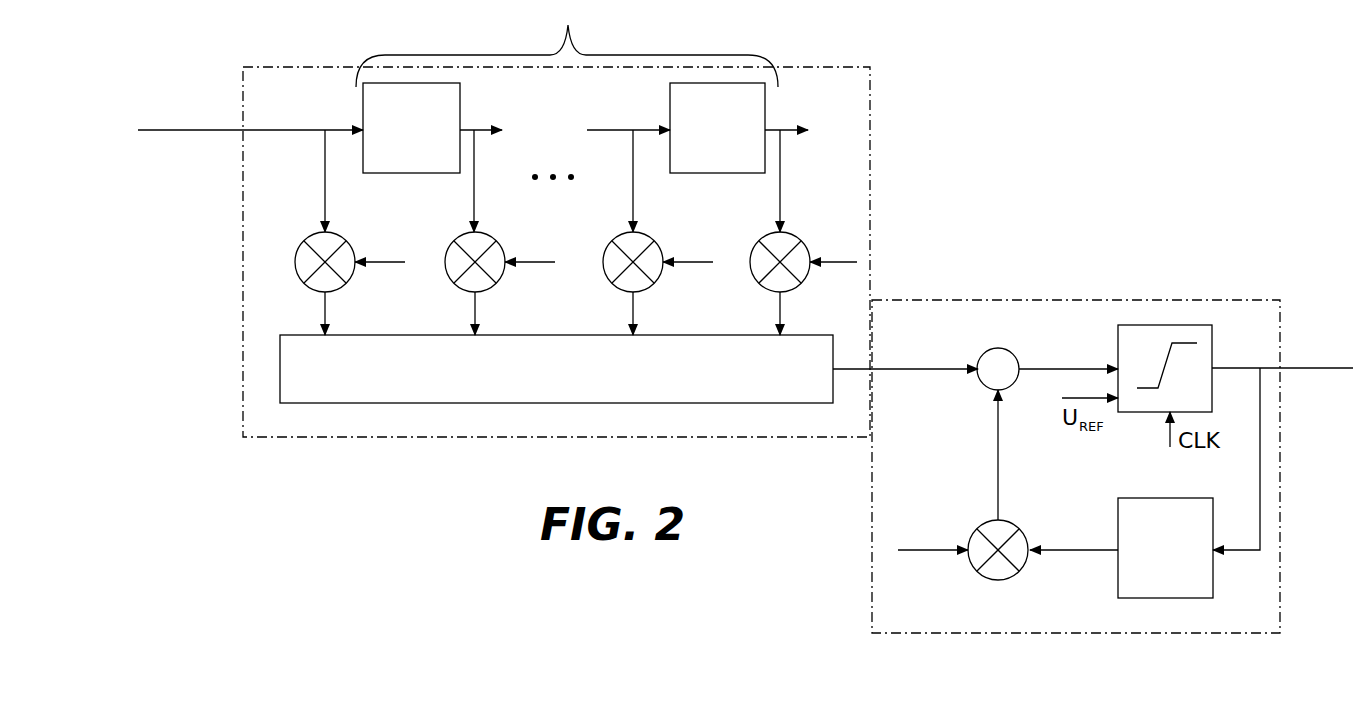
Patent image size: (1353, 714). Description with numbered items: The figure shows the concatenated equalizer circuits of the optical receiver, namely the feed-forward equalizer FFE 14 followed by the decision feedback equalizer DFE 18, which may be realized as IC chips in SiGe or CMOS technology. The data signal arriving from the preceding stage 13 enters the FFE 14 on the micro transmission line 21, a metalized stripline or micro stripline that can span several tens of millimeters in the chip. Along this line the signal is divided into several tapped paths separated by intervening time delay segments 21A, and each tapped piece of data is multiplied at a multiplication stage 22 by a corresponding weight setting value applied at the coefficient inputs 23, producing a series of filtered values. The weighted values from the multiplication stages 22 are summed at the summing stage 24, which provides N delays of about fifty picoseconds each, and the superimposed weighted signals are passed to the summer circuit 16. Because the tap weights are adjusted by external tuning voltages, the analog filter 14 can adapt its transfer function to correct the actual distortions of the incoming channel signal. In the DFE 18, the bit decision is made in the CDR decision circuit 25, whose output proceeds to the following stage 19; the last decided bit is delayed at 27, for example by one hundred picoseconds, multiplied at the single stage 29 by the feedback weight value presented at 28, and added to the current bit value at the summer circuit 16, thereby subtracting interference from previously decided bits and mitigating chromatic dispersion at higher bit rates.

The input from preceding stage 13 is at (250, 116).
The FFE 14 is at (556, 252).
The summer circuit 16 is at (1003, 353).
The DFE 18 is at (1076, 466).
The output to following stage 19 is at (1282, 354).
The micro transmission line 21 is at (567, 43).
The time delay segments 21A is at (453, 108).
The multiplication stages 22 is at (318, 240).
The coefficient input 23 is at (373, 264).
The summing stage 24 is at (307, 346).
The CDR decision circuit 25 is at (1205, 338).
The delay 27 is at (1143, 505).
The weight value input 28 is at (915, 553).
The single stage 29 is at (990, 528).